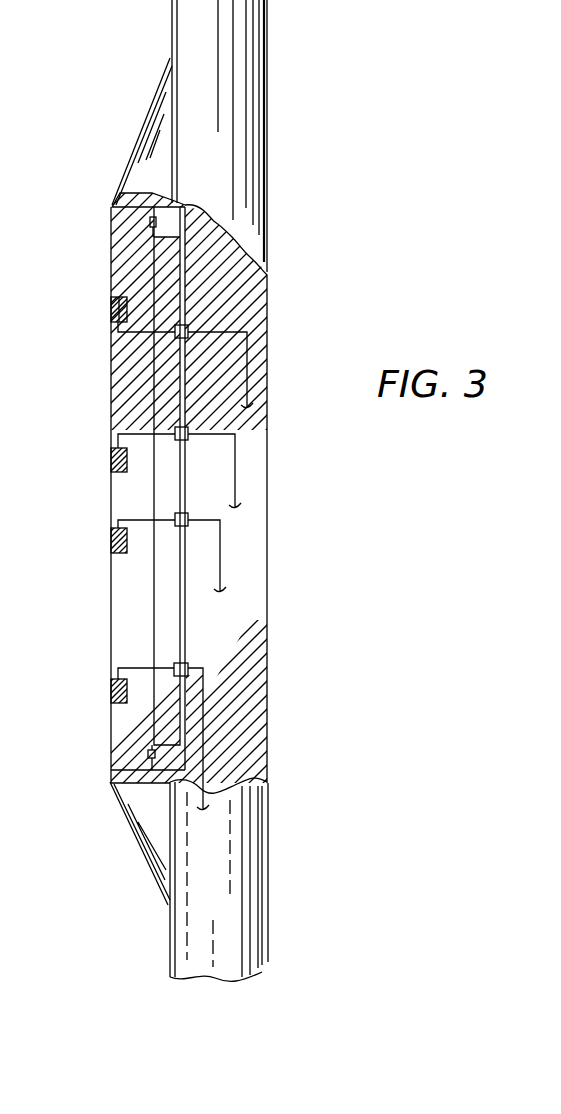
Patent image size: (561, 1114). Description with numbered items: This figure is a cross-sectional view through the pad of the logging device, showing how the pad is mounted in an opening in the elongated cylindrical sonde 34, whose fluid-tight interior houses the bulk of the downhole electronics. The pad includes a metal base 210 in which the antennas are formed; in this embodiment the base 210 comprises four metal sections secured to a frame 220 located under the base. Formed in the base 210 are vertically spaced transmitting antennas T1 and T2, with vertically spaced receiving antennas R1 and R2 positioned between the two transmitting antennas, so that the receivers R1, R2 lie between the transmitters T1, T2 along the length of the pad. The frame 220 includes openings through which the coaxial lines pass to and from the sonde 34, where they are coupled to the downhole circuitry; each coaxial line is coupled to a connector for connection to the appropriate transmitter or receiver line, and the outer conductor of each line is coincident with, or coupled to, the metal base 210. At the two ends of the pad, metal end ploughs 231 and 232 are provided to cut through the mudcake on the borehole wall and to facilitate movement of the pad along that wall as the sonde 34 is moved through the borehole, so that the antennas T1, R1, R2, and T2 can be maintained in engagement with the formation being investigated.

The sonde 34 is at (240, 54).
The metal base 210 is at (122, 254).
The frame 220 is at (183, 207).
The metal end plough 231 is at (152, 137).
The metal end plough 232 is at (143, 815).
The transmitting antenna T1 is at (111, 310).
The transmitting antenna T2 is at (110, 697).
The receiving antenna R1 is at (110, 462).
The receiving antenna R2 is at (110, 548).